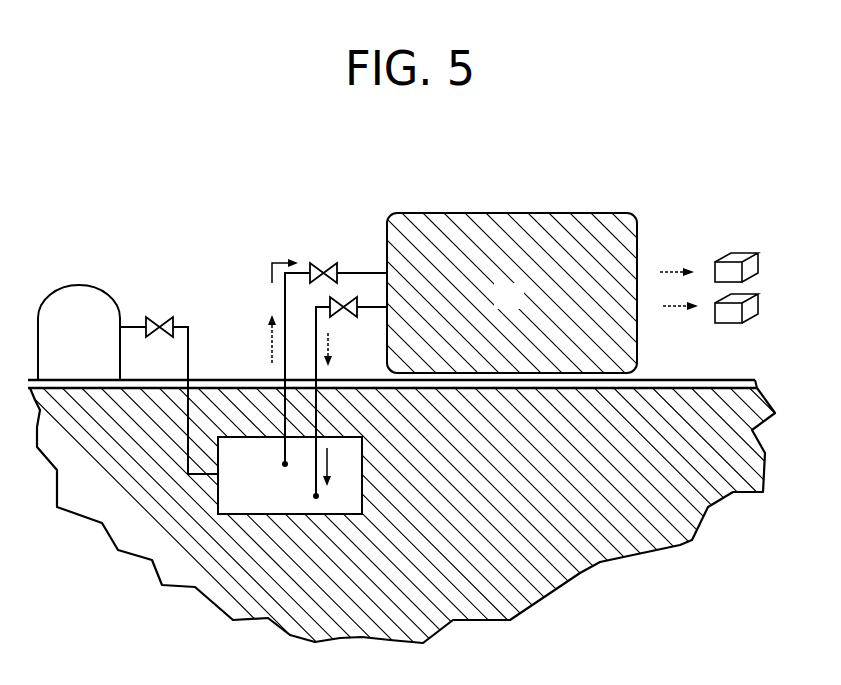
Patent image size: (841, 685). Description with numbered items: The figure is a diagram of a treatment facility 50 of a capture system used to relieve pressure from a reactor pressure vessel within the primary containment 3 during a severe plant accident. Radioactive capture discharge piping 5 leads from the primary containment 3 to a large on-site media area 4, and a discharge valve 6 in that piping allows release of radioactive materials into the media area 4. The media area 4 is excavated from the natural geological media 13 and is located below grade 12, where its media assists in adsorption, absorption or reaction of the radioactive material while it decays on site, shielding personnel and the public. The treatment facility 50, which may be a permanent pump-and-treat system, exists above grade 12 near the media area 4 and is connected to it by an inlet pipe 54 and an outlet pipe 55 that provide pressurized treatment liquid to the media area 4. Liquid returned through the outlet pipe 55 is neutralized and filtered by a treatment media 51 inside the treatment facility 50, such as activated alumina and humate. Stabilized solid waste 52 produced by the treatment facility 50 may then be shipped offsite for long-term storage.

The primary containment 3 is at (109, 293).
The discharge valve 6 is at (161, 316).
The radioactive capture discharge piping 5 is at (189, 446).
The media area 4 is at (362, 465).
The outlet pipe 55 is at (284, 412).
The inlet pipe 54 is at (317, 412).
The treatment facility 50 is at (523, 282).
The treatment media 51 is at (497, 306).
The stabilized solid waste 52 is at (759, 257).
The grade 12 is at (690, 380).
The natural geological media 13 is at (521, 471).